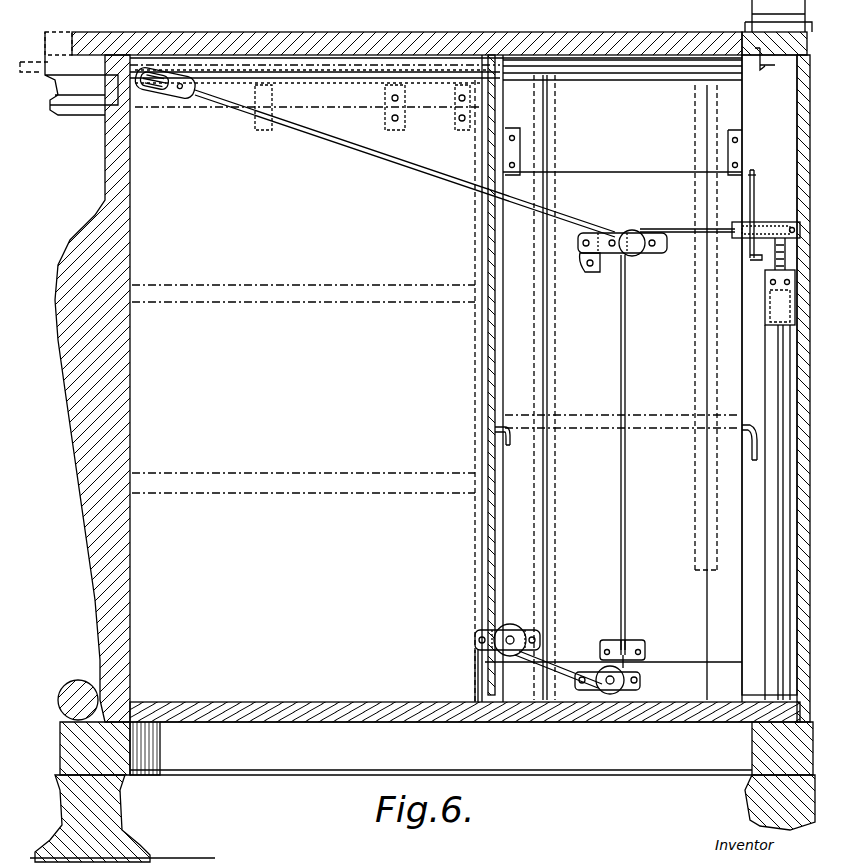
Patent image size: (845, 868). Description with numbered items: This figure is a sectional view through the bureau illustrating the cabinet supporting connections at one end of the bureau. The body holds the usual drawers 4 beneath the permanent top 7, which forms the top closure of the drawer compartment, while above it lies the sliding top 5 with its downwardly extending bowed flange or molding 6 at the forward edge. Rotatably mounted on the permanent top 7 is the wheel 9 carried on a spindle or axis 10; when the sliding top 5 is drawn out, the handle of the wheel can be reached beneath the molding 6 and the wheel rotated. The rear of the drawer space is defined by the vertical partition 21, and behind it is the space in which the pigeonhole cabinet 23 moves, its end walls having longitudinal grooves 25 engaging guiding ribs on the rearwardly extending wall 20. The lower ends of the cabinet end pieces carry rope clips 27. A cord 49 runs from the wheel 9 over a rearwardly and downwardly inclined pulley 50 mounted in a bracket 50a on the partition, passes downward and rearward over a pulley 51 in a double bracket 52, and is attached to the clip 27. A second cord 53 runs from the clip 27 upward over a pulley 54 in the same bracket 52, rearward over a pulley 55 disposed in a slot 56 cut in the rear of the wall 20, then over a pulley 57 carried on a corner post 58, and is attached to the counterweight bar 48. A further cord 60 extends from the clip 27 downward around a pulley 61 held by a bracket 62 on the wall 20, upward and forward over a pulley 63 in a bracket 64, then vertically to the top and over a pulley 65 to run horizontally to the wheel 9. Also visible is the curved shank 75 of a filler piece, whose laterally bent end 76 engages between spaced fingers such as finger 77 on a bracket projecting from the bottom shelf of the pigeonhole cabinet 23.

The drawers 4 is at (404, 63).
The sliding top 5 is at (358, 58).
The flange or molding 6 is at (68, 95).
The permanent top 7 is at (415, 82).
The wheel 9 is at (378, 70).
The spindle or axis 10 is at (320, 58).
The rearwardly extending wall 20 is at (613, 387).
The vertical partition 21 is at (482, 352).
The pigeonhole cabinet 23 is at (600, 62).
The longitudinal grooves 25 is at (548, 480).
The rope clips 27 is at (630, 650).
The counterweight bar 48 is at (770, 320).
The cord 49 is at (365, 148).
The pulley 50 is at (170, 75).
The bracket 50a is at (188, 100).
The pulley 51 is at (618, 232).
The bracket 52 is at (588, 268).
The cord 53 is at (672, 228).
The pulley 54 is at (638, 255).
The pulley 55 is at (762, 224).
The slot 56 is at (756, 200).
The pulley 57 is at (770, 260).
The corner posts 58 is at (769, 375).
The cord 60 is at (482, 413).
The pulley 61 is at (585, 668).
The bracket 62 is at (640, 680).
The pulley 63 is at (520, 625).
The bracket 64 is at (535, 632).
The pulley 65 is at (500, 62).
The shank 75 is at (750, 203).
The laterally extended end 76 is at (750, 255).
The finger 77 is at (303, 391).